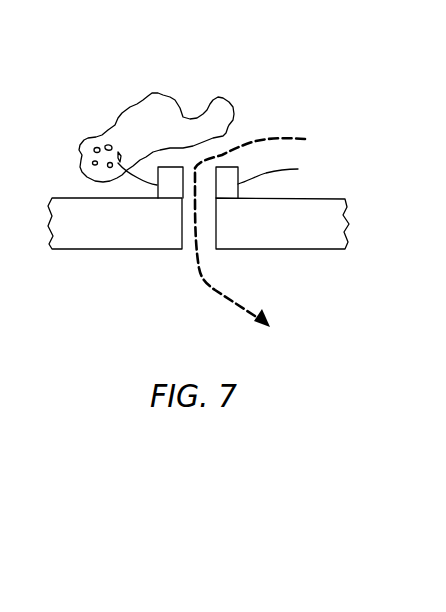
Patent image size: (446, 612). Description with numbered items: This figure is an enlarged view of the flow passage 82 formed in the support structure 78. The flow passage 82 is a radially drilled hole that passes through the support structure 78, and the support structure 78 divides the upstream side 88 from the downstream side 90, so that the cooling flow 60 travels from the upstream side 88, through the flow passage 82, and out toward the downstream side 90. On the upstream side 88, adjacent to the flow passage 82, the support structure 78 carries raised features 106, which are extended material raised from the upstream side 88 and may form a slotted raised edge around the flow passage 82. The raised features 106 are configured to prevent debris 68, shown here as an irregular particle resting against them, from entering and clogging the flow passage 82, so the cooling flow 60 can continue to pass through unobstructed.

The cooling flow 60 is at (213, 292).
The debris 68 is at (220, 98).
The support structure 78 is at (345, 225).
The flow passage 82 is at (188, 246).
The upstream side 88 is at (68, 198).
The downstream side 90 is at (73, 249).
The raised features 106 is at (130, 173).